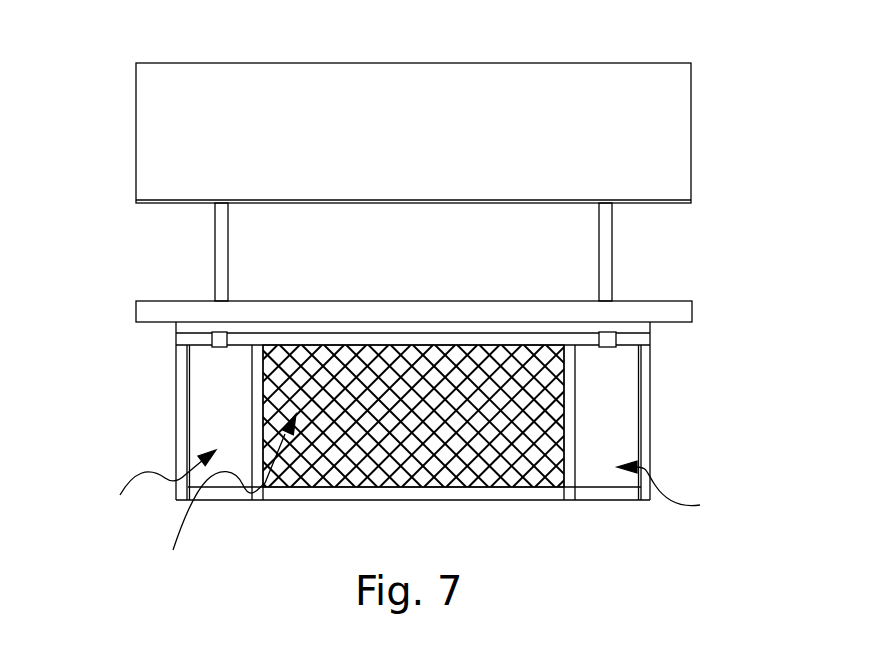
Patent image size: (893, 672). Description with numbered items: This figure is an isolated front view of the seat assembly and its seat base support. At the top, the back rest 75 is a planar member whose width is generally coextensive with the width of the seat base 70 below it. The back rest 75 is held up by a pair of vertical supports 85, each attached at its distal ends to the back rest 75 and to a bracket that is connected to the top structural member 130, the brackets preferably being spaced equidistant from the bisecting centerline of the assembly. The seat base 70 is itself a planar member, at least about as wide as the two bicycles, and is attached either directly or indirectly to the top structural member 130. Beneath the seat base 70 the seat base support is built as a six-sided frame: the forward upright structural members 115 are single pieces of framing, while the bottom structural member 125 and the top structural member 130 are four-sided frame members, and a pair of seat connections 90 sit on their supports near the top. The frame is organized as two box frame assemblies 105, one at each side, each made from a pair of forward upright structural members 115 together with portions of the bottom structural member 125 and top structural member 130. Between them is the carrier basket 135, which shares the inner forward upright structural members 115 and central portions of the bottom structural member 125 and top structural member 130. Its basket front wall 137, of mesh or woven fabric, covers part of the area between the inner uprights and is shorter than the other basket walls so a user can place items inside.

The back rest 75 is at (415, 63).
The vertical support 85 is at (213, 227).
The seat base 70 is at (310, 301).
The top structural member 130 is at (645, 338).
The forward upright structural member 115 is at (175, 408).
The bottom structural member 125 is at (472, 500).
The basket front wall 137 is at (423, 348).
The seat connection 90 is at (216, 347).
The box frame assembly 105 is at (410, 491).
The carrier basket 135 is at (213, 502).